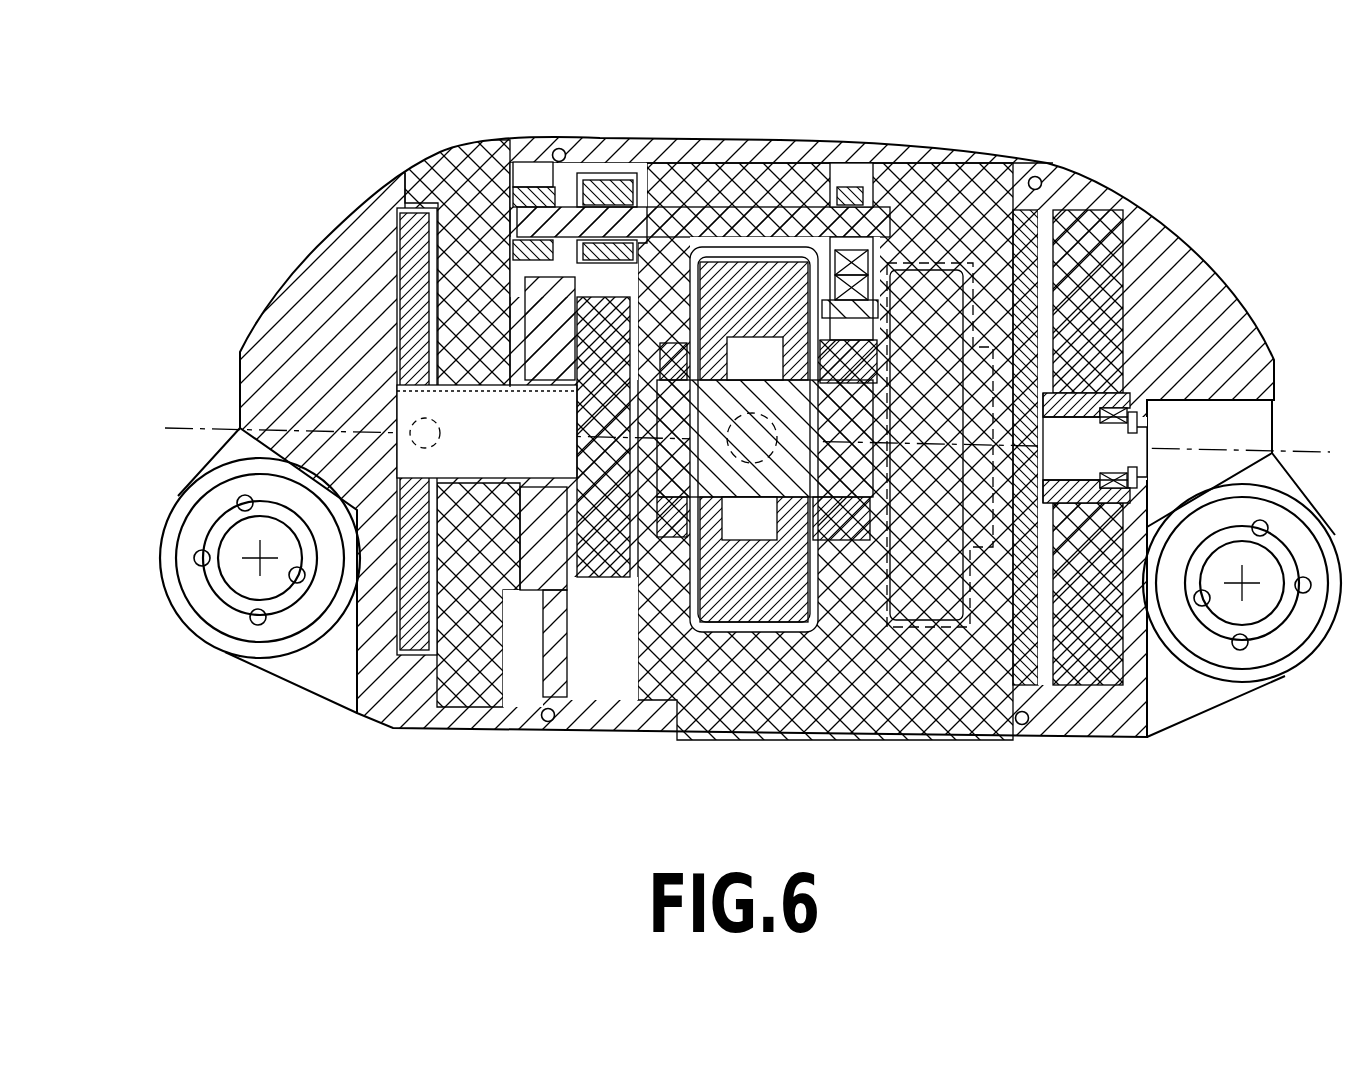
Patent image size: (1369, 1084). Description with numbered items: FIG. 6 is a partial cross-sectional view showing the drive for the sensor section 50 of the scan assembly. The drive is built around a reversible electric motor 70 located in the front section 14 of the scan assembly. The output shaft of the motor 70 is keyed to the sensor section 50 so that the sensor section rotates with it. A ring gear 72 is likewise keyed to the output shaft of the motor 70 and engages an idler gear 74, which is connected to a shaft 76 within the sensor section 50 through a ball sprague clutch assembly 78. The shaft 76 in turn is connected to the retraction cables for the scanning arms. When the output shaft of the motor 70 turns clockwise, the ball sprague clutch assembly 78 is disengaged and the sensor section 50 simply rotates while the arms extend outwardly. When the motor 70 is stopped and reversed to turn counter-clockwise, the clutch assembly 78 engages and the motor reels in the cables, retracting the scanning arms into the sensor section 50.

The front section 14 is at (338, 201).
The sensor section 50 is at (933, 147).
The reversible electric motor 70 is at (460, 125).
The ring gear 72 is at (553, 663).
The idler gear 74 is at (528, 137).
The shaft 76 is at (790, 140).
The ball sprague clutch assembly 78 is at (672, 137).